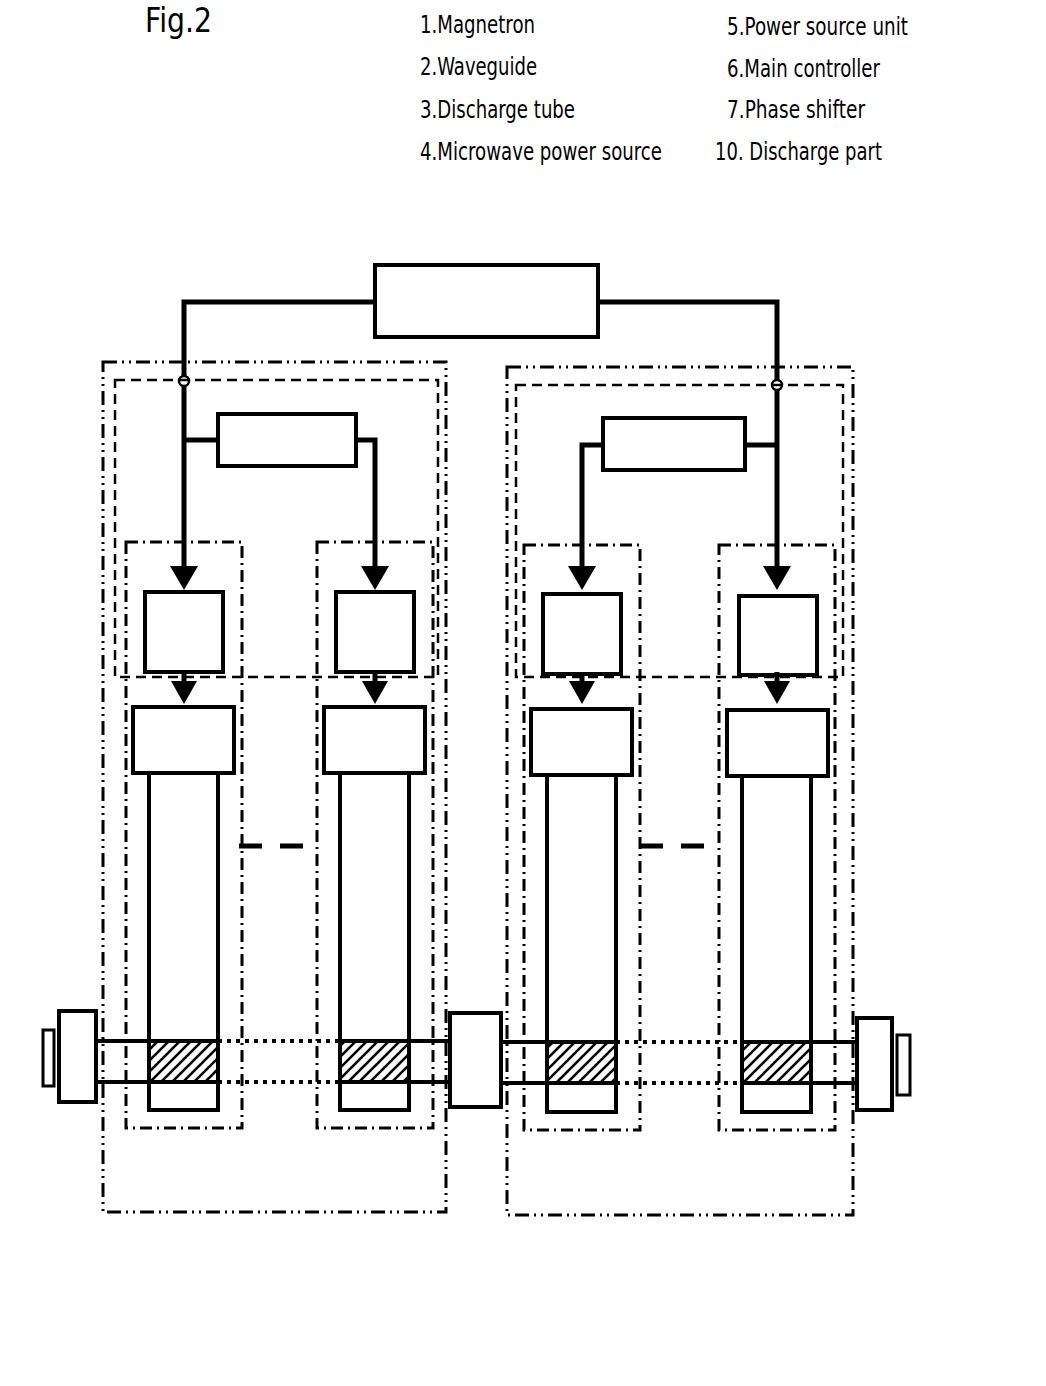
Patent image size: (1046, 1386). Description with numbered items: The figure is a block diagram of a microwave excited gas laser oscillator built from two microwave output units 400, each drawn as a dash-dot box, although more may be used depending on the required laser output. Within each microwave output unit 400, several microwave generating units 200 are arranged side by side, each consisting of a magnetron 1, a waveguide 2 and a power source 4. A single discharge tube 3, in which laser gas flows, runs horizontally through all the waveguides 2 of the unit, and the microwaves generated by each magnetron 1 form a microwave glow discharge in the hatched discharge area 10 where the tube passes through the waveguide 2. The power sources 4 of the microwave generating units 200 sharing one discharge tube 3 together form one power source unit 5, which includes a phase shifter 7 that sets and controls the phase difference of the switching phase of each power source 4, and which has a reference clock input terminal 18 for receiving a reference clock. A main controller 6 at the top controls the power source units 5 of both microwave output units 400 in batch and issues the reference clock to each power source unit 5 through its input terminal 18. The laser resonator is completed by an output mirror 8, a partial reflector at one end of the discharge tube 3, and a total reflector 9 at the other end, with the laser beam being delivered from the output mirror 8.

The magnetron 1 is at (123, 750).
The waveguide 2 is at (139, 902).
The discharge tube 3 is at (263, 1082).
The power source 4 is at (137, 625).
The power source unit 5 is at (112, 530).
The main controller 6 is at (383, 265).
The phase shifter 7 is at (267, 413).
The output mirror 8 is at (46, 1088).
The total reflector 9 is at (903, 1097).
The discharge area 10 is at (370, 1082).
The reference clock input terminal 18 is at (181, 377).
The microwave generating unit 200 is at (200, 542).
The microwave output unit 400 is at (237, 362).